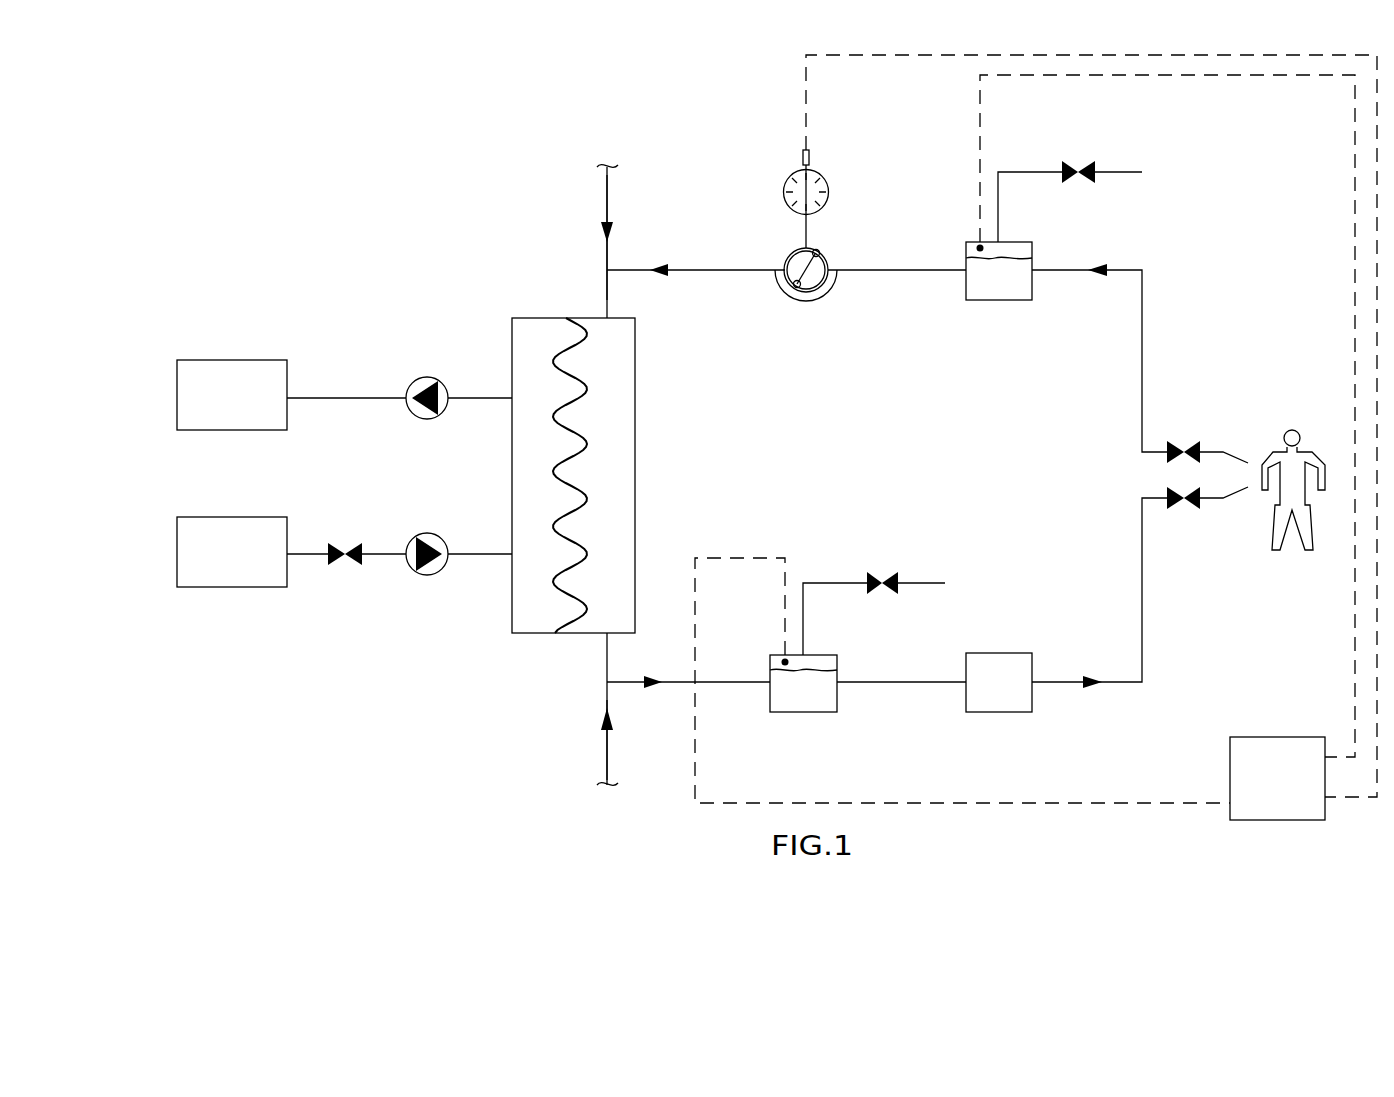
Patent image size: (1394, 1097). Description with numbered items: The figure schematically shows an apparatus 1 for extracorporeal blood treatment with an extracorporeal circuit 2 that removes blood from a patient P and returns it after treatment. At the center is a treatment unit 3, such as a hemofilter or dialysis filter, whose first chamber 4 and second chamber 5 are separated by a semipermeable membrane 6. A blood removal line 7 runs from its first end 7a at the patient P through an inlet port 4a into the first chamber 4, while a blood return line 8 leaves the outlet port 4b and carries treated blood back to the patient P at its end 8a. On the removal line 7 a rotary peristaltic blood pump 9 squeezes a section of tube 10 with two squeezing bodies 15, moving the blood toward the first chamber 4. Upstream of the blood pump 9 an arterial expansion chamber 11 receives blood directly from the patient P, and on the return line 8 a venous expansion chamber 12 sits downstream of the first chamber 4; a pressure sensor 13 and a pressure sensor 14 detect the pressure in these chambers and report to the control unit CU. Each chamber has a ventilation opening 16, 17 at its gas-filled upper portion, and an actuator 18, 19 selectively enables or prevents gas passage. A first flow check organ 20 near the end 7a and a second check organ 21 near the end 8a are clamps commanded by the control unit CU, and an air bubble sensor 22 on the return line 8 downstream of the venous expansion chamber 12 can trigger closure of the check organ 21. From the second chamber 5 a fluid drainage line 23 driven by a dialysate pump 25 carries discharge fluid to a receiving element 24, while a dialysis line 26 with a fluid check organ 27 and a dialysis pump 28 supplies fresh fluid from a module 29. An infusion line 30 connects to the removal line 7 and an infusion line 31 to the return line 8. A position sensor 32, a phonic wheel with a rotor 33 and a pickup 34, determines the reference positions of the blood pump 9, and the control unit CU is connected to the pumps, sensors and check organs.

The apparatus for extracorporeal blood treatment 1 is at (245, 138).
The extracorporeal circuit 2 is at (1205, 218).
The treatment unit 3 is at (500, 300).
The first chamber 4 is at (594, 475).
The inlet port 4a is at (607, 290).
The outlet port 4b is at (607, 655).
The second chamber 5 is at (525, 475).
The semipermeable membrane 6 is at (565, 345).
The blood removal line 7 is at (1155, 318).
The first end of the removal line 7a is at (1240, 460).
The blood return line 8 is at (915, 700).
The end of the return line 8a is at (1240, 492).
The blood pump 9 is at (775, 248).
The section of tube 10 is at (812, 292).
The arterial expansion chamber 11 is at (1035, 325).
The venous expansion chamber 12 is at (797, 725).
The pressure sensor 13 is at (980, 248).
The pressure sensor 14 is at (785, 662).
The squeezing bodies 15 is at (794, 288).
The ventilation opening 16 is at (998, 212).
The ventilation opening 17 is at (803, 580).
The actuator 18 is at (1080, 168).
The actuator 19 is at (886, 565).
The first flow check organ 20 is at (1187, 447).
The second check organ 21 is at (1178, 505).
The air bubble sensor 22 is at (1013, 713).
The fluid drainage line 23 is at (335, 398).
The receiving element 24 is at (232, 395).
The dialysate pump 25 is at (413, 383).
The dialysis line 26 is at (380, 555).
The fluid check organ 27 is at (340, 562).
The dialysis pump 28 is at (440, 575).
The module 29 is at (232, 552).
The infusion line 30 is at (607, 195).
The infusion line 31 is at (607, 760).
The position sensor 32 is at (868, 162).
The rotor 33 is at (778, 170).
The pickup 34 is at (809, 157).
The control unit CU is at (1277, 778).
The patient P is at (1302, 450).